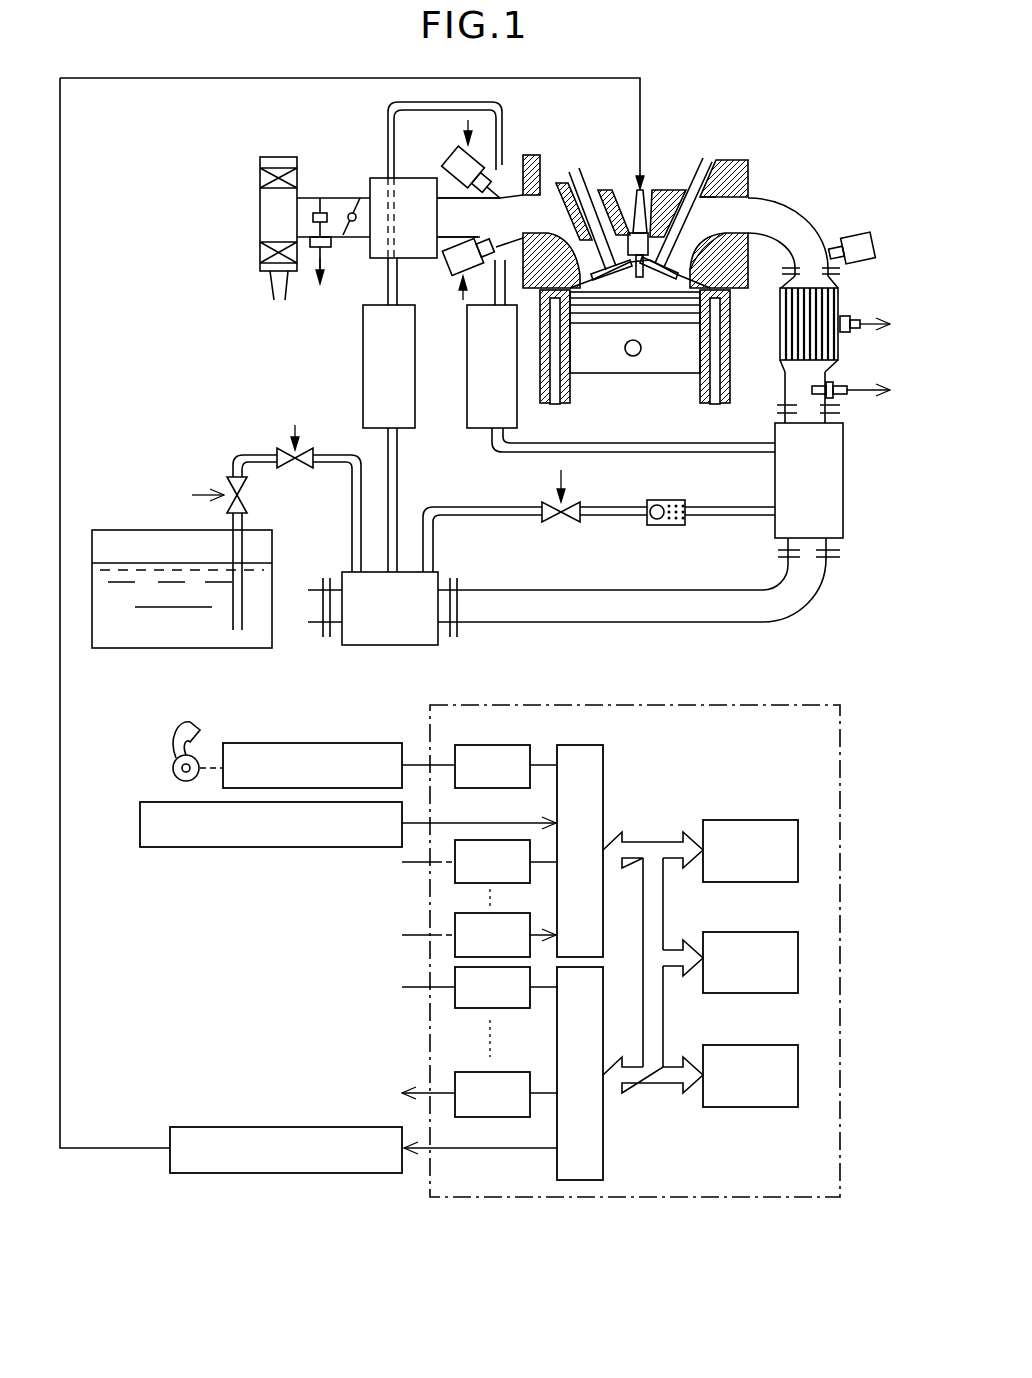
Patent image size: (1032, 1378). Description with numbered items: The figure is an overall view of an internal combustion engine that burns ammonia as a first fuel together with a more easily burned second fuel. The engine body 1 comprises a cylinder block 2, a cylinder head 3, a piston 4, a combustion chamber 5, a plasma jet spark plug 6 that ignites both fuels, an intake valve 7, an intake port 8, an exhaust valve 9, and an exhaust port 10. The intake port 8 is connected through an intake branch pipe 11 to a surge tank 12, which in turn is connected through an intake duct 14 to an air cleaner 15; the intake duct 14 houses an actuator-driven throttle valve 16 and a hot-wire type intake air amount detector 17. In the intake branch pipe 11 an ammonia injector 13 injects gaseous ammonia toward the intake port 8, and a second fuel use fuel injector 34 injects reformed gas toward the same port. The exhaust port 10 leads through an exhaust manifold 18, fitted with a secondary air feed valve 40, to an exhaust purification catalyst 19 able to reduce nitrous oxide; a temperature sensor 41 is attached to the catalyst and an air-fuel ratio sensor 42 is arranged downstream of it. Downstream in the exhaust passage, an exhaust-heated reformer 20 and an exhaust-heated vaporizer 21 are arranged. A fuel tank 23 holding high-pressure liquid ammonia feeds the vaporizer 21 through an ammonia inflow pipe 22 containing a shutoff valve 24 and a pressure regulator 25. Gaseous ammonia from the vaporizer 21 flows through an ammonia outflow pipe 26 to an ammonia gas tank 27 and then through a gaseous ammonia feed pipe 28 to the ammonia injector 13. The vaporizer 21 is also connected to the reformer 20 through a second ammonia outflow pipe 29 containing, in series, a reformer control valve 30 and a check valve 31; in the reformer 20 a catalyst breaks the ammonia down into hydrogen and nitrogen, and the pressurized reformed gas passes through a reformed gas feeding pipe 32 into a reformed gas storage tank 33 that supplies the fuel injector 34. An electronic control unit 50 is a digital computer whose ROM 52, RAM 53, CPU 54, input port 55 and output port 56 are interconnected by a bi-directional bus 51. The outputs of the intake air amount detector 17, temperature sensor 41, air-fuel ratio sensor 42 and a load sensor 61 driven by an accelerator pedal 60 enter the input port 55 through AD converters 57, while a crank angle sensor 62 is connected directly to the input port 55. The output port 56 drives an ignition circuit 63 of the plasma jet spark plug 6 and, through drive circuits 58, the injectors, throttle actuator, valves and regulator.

The internal combustion engine body 1 is at (757, 170).
The cylinder block 2 is at (727, 337).
The cylinder head 3 is at (751, 190).
The piston 4 is at (598, 358).
The combustion chamber 5 is at (654, 290).
The plasma jet spark plug 6 is at (650, 178).
The intake valve 7 is at (592, 245).
The intake port 8 is at (546, 223).
The exhaust valve 9 is at (682, 210).
The exhaust port 10 is at (718, 212).
The intake branch pipe 11 is at (452, 197).
The surge tank 12 is at (383, 178).
The ammonia injector 13 is at (455, 158).
The intake duct 14 is at (343, 240).
The air cleaner 15 is at (259, 269).
The throttle valve 16 is at (352, 212).
The intake air amount detector 17 is at (320, 200).
The exhaust manifold 18 is at (800, 227).
The exhaust purification catalyst 19 is at (836, 308).
The reformer 20 is at (849, 494).
The vaporizer 21 is at (404, 649).
The ammonia inflow pipe 22 is at (353, 498).
The fuel tank 23 is at (134, 527).
The shutoff valve 24 is at (249, 497).
The pressure regulator 25 is at (289, 449).
The ammonia outflow pipe 26 is at (398, 472).
The ammonia gas tank 27 is at (364, 353).
The gaseous ammonia feed pipe 28 is at (390, 105).
The ammonia outflow pipe 29 is at (480, 519).
The reformer control valve 30 is at (567, 523).
The check valve 31 is at (657, 526).
The reformed gas feeding pipe 32 is at (543, 452).
The reformed gas storage tank 33 is at (512, 408).
The fuel injector 34 is at (448, 270).
The secondary air feed valve 40 is at (856, 246).
The temperature sensor 41 is at (860, 333).
The air-fuel ratio sensor 42 is at (843, 396).
The electronic control unit 50 is at (808, 703).
The bi-directional bus 51 is at (658, 848).
The ROM 52 is at (762, 820).
The RAM 53 is at (762, 932).
The CPU 54 is at (762, 1045).
The input port 55 is at (606, 762).
The output port 56 is at (604, 1158).
The AD converter 57 is at (497, 745).
The drive circuit 58 is at (455, 1085).
The accelerator pedal 60 is at (170, 753).
The load sensor 61 is at (262, 743).
The crank angle sensor 62 is at (158, 847).
The ignition circuit 63 is at (268, 1127).